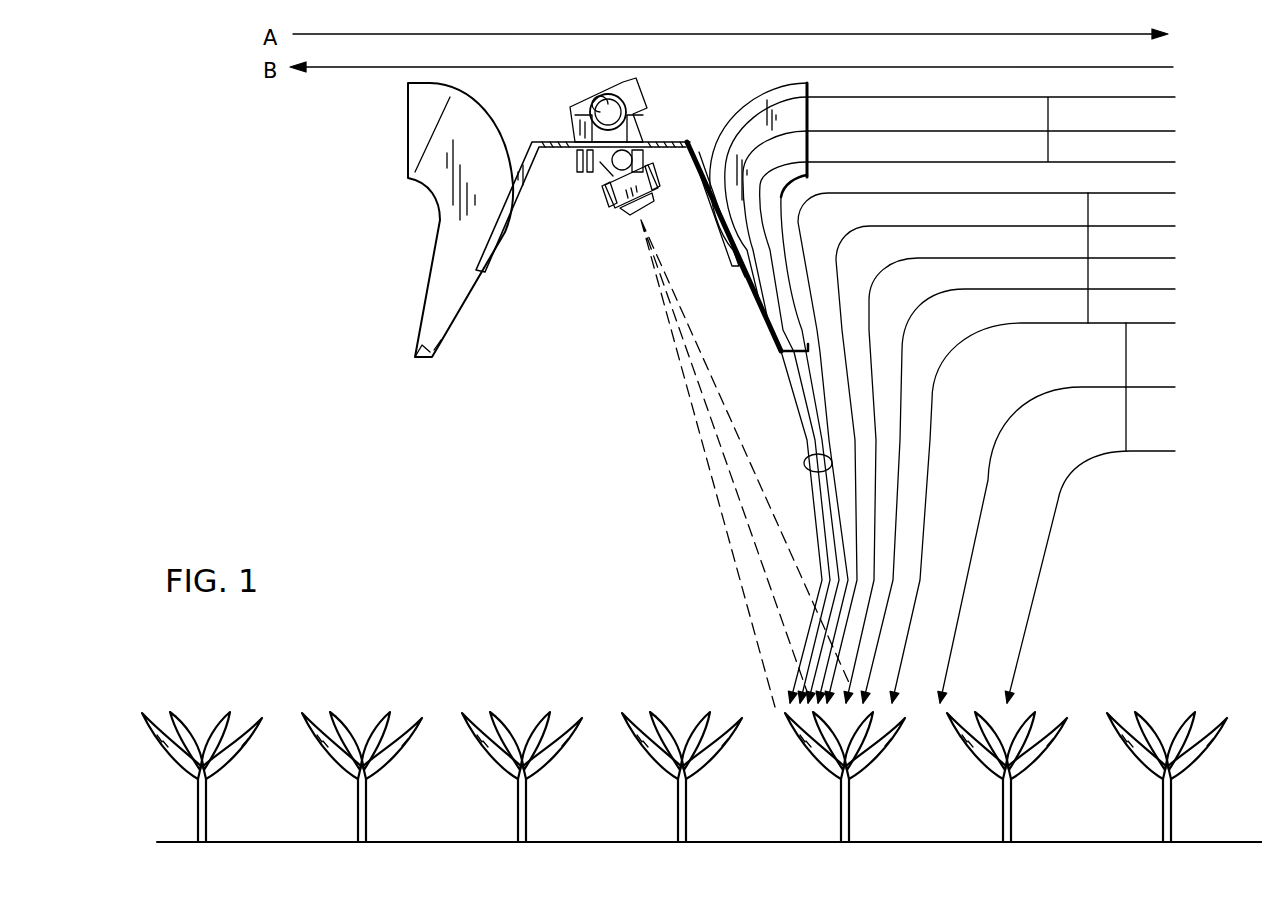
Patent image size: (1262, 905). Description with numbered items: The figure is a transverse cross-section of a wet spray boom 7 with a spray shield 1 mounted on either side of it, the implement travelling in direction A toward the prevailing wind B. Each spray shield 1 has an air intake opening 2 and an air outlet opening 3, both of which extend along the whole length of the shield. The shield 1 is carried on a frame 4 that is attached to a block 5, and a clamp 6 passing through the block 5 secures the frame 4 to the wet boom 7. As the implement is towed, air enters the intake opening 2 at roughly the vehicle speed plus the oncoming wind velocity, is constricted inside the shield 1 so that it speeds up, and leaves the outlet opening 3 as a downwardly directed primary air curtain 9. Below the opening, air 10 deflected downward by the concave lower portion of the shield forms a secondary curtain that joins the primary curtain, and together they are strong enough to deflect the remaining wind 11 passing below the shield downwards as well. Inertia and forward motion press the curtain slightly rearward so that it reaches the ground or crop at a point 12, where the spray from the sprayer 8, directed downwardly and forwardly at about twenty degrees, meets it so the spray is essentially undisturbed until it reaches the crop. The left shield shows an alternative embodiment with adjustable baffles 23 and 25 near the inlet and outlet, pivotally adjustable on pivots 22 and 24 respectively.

The spray shield 1 is at (768, 122).
The air intake opening 2 is at (808, 116).
The air outlet opening 3 is at (786, 355).
The frame 4 is at (700, 162).
The block 5 is at (648, 130).
The clamp 6 is at (592, 95).
The wet spray boom 7 is at (586, 108).
The sprayer 8 is at (641, 218).
The primary air curtain 9 is at (804, 461).
The secondary curtain of air 10 is at (1090, 268).
The remaining wind below the shield 11 is at (1128, 378).
The point near the ground 12 is at (856, 626).
The pivot 22 is at (433, 133).
The adjustable baffle 23 is at (440, 106).
The pivot 24 is at (412, 348).
The adjustable baffle 25 is at (443, 343).